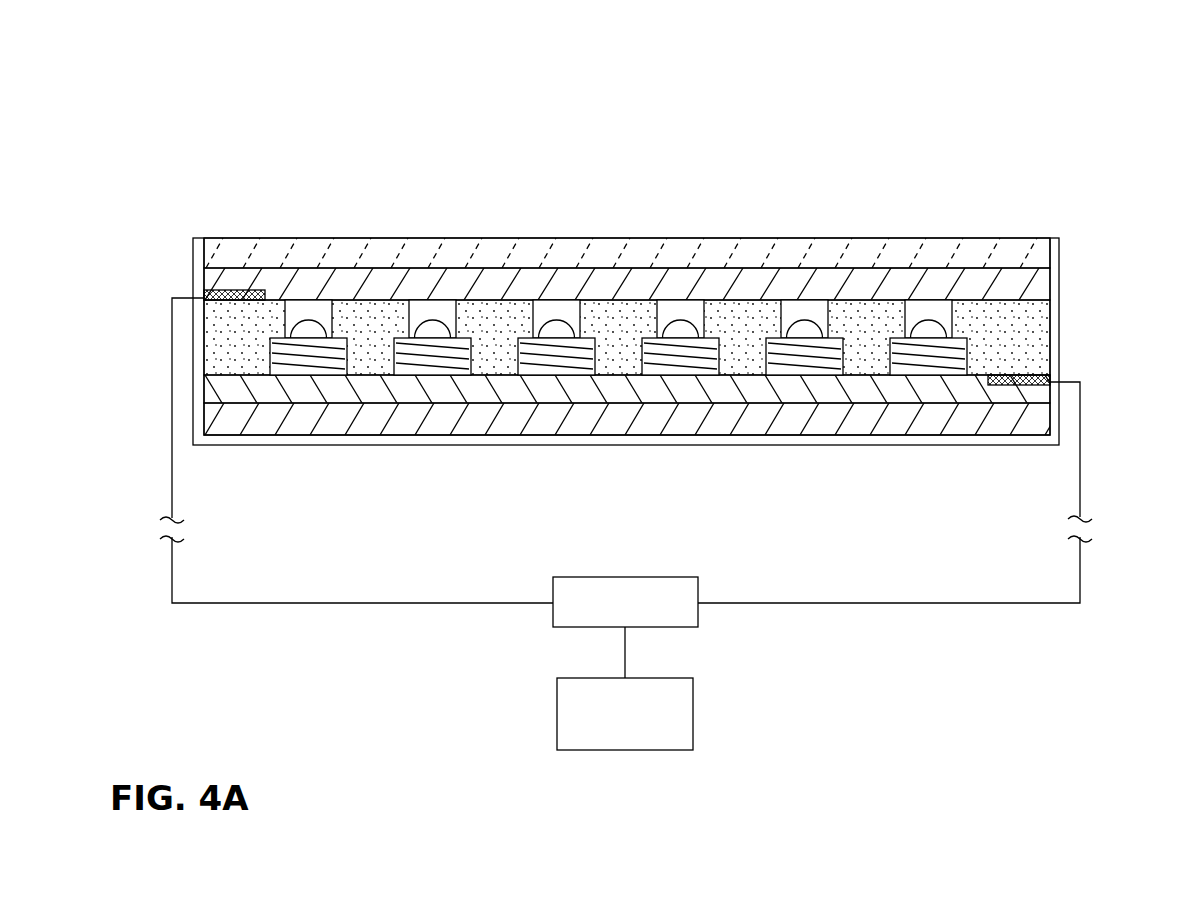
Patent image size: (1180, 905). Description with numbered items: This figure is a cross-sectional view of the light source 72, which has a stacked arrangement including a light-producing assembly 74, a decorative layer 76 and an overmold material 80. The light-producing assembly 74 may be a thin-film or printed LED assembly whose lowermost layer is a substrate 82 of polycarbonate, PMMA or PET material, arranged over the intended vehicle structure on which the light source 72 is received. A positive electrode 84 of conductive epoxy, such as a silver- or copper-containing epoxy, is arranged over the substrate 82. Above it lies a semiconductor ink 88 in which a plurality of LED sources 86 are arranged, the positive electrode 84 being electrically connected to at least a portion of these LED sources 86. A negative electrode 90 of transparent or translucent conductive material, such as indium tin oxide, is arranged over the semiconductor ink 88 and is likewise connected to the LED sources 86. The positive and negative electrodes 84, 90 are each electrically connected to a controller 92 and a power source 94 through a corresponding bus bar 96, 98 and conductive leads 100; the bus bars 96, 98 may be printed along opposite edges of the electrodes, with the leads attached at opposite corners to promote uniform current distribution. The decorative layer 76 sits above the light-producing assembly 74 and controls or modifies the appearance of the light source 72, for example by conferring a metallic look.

The light source 72 is at (607, 400).
The light-producing assembly 74 is at (603, 363).
The decorative layer 76 is at (1050, 256).
The overmold material 80 is at (1055, 240).
The substrate 82 is at (1050, 425).
The positive electrode 84 is at (1050, 397).
The LED sources 86 is at (322, 360).
The semiconductor ink 88 is at (1050, 330).
The negative electrode 90 is at (1050, 287).
The controller 92 is at (698, 619).
The power source 94 is at (693, 695).
The bus bar 96 is at (1050, 378).
The bus bar 98 is at (204, 292).
The conductive leads 100 is at (172, 481).